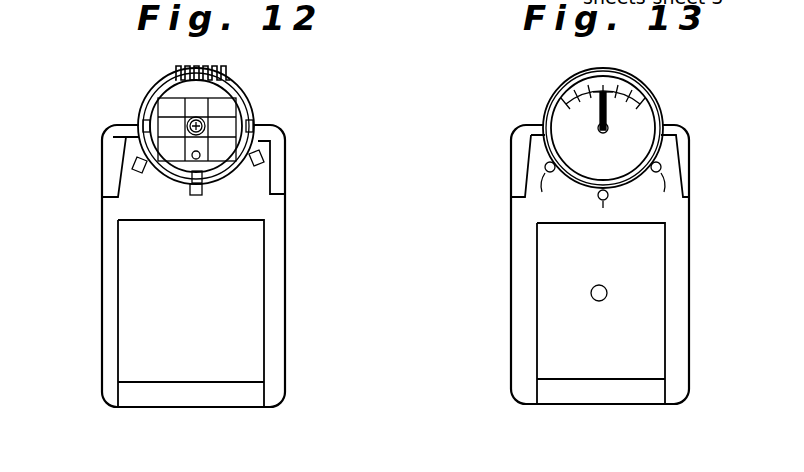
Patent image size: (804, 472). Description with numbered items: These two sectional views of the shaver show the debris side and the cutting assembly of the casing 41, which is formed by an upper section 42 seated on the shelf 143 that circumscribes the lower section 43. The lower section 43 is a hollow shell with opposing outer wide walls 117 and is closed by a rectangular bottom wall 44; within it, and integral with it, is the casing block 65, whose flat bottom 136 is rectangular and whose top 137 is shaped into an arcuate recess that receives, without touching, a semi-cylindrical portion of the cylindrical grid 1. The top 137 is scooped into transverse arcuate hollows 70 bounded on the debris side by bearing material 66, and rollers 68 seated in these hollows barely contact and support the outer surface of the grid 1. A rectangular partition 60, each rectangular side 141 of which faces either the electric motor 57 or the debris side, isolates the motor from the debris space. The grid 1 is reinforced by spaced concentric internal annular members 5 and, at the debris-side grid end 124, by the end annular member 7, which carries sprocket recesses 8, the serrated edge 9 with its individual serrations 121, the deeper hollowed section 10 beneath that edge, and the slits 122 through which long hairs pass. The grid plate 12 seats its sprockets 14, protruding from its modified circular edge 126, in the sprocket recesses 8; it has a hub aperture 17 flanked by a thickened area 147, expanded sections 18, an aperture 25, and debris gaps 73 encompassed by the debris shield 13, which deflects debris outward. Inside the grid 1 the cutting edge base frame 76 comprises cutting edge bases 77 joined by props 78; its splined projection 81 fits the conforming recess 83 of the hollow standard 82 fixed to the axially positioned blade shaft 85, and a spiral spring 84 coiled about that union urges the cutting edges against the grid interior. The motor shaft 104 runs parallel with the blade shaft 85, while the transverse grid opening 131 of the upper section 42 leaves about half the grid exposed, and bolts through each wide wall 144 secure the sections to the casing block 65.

In FIG. 12, the cylindrical grid 1 is at (255, 108).
In FIG. 13, the cylindrical grid 1 is at (567, 82).
In FIG. 13, the internal annular members 5 is at (630, 76).
In FIG. 12, the end annular member 7 is at (150, 90).
In FIG. 12, the sprocket recesses 8 is at (255, 126).
In FIG. 12, the serrated edge 9 is at (212, 66).
In FIG. 12, the hollowed section 10 is at (197, 121).
In FIG. 12, the grid plate 12 is at (197, 107).
In FIG. 12, the debris shield 13 is at (238, 157).
In FIG. 12, the sprockets 14 is at (150, 115).
In FIG. 12, the hub aperture 17 is at (209, 126).
In FIG. 12, the expanded sections 18 is at (135, 135).
In FIG. 12, the aperture 25 is at (197, 149).
In FIG. 12, the casing 41 is at (100, 200).
In FIG. 13, the casing 41 is at (510, 200).
In FIG. 12, the upper section 42 is at (285, 180).
In FIG. 13, the upper section 42 is at (689, 172).
In FIG. 12, the lower section 43 is at (285, 270).
In FIG. 13, the lower section 43 is at (689, 310).
In FIG. 12, the bottom wall 44 is at (166, 408).
In FIG. 13, the electric motor 57 is at (639, 361).
In FIG. 12, the partition 60 is at (234, 289).
In FIG. 12, the casing block 65 is at (260, 207).
In FIG. 12, the bearing material 66 is at (264, 160).
In FIG. 12, the rollers 68 is at (199, 196).
In FIG. 13, the rollers 68 is at (552, 173).
In FIG. 13, the transverse arcuate hollows 70 is at (542, 195).
In FIG. 12, the debris gaps 73 is at (197, 127).
In FIG. 13, the cutting edge base frame 76 is at (646, 116).
In FIG. 13, the cutting edge base 77 is at (655, 100).
In FIG. 13, the props 78 is at (570, 130).
In FIG. 13, the splined projection 81 is at (597, 87).
In FIG. 13, the hollow standard 82 is at (577, 150).
In FIG. 13, the conforming recess 83 is at (648, 91).
In FIG. 13, the spiral spring 84 is at (622, 136).
In FIG. 13, the blade shaft 85 is at (611, 155).
In FIG. 13, the motor shaft 104 is at (606, 290).
In FIG. 12, the outer wide walls 117 is at (285, 320).
In FIG. 13, the outer wide walls 117 is at (689, 268).
In FIG. 12, the individual serrations 121 is at (248, 80).
In FIG. 12, the slits 122 is at (190, 68).
In FIG. 12, the grid end 124 is at (152, 78).
In FIG. 12, the modified circular edge 126 is at (154, 172).
In FIG. 13, the transverse grid opening 131 is at (545, 118).
In FIG. 12, the bottom 136 is at (192, 227).
In FIG. 13, the bottom 136 is at (590, 225).
In FIG. 12, the top 137 is at (164, 214).
In FIG. 12, the rectangular side 141 is at (221, 314).
In FIG. 12, the shelf 143 is at (102, 208).
In FIG. 13, the shelf 143 is at (511, 208).
In FIG. 12, the wide wall 144 is at (102, 160).
In FIG. 13, the wide wall 144 is at (511, 178).
In FIG. 12, the thickened area 147 is at (171, 127).